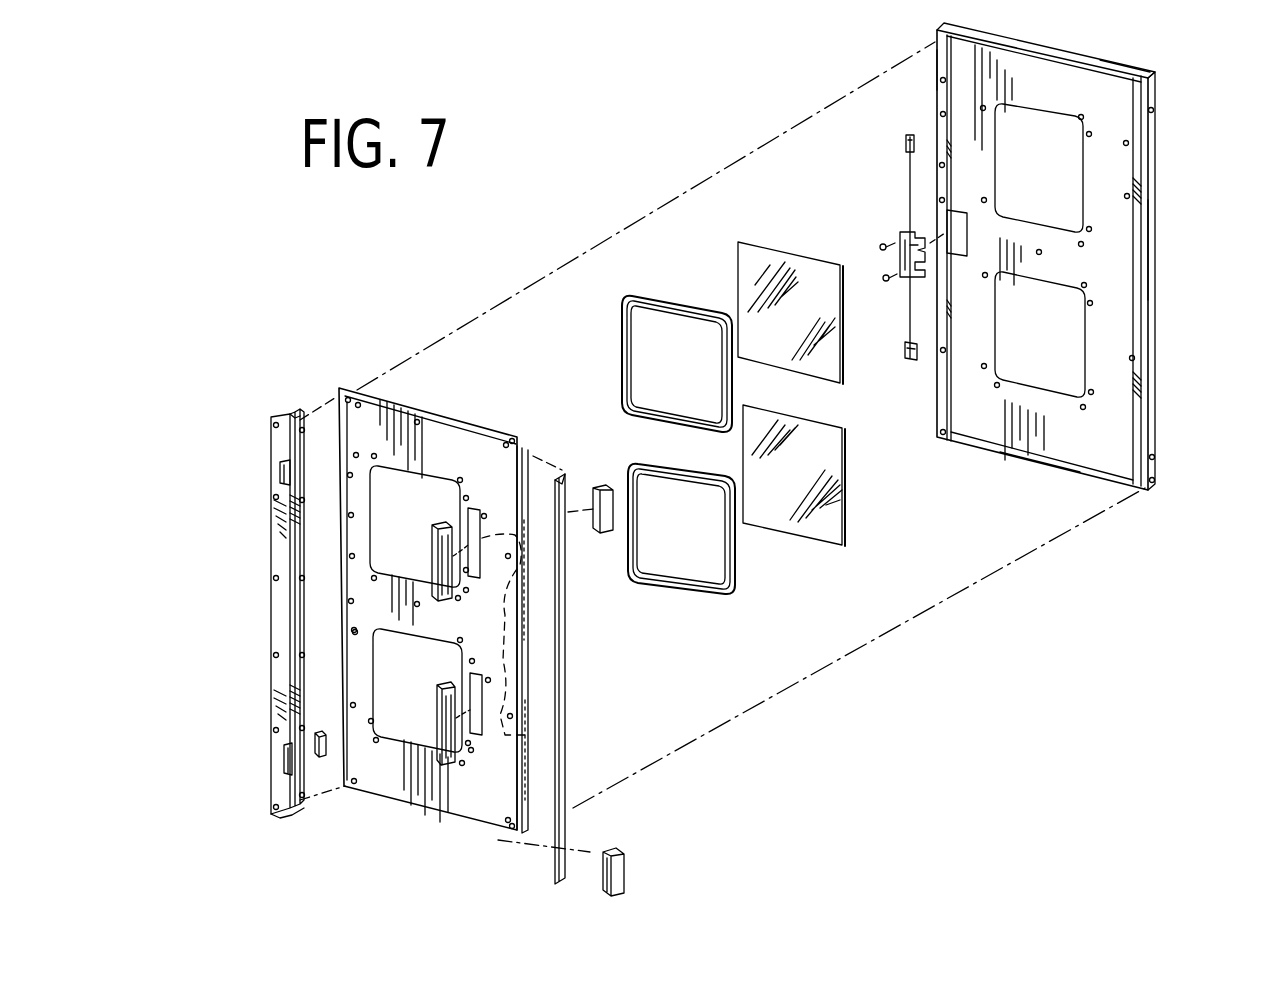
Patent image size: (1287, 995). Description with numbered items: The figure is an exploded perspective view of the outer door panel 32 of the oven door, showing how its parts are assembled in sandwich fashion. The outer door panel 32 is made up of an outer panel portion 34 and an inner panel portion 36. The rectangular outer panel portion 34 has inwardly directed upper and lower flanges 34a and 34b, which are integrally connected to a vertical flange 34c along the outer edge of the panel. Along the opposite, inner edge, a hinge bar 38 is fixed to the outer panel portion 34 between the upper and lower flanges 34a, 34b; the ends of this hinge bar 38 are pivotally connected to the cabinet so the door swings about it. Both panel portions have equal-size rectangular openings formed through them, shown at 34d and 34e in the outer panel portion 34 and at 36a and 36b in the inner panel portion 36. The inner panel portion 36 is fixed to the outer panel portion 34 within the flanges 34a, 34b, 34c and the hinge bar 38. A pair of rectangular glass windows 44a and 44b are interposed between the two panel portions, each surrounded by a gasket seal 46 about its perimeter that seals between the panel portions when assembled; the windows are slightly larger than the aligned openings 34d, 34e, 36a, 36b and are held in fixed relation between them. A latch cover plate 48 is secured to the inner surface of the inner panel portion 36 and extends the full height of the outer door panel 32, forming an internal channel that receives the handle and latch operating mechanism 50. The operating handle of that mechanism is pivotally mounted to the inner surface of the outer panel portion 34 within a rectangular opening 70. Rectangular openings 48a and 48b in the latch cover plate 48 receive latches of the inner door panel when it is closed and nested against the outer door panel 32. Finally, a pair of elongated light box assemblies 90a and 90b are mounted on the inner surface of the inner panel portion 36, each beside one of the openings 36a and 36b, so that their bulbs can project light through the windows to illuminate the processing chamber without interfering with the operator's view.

The outer door panel 32 is at (1200, 210).
The outer panel portion 34 is at (1060, 82).
The upper flange 34a is at (1120, 66).
The lower flange 34b is at (1060, 462).
The vertical flange 34c is at (937, 63).
The rectangular opening 34d is at (1035, 224).
The rectangular opening 34e is at (1035, 388).
The inner panel portion 36 is at (434, 625).
The rectangular opening 36a is at (426, 471).
The rectangular opening 36b is at (397, 742).
The hinge bar 38 is at (1152, 322).
The glass window 44a is at (764, 255).
The glass window 44b is at (768, 527).
The gasket seal 46 is at (622, 343).
The latch cover plate 48 is at (275, 628).
The rectangular opening 48a is at (282, 473).
The rectangular opening 48b is at (286, 762).
The handle and latch operating mechanism 50 is at (894, 218).
The rectangular opening 70 is at (957, 214).
The light box assembly 90a is at (440, 548).
The light box assembly 90b is at (436, 692).